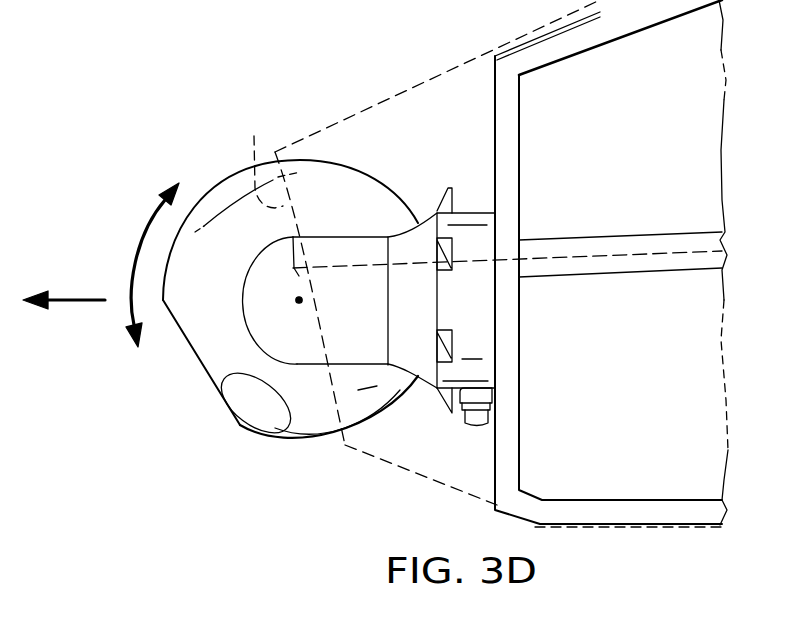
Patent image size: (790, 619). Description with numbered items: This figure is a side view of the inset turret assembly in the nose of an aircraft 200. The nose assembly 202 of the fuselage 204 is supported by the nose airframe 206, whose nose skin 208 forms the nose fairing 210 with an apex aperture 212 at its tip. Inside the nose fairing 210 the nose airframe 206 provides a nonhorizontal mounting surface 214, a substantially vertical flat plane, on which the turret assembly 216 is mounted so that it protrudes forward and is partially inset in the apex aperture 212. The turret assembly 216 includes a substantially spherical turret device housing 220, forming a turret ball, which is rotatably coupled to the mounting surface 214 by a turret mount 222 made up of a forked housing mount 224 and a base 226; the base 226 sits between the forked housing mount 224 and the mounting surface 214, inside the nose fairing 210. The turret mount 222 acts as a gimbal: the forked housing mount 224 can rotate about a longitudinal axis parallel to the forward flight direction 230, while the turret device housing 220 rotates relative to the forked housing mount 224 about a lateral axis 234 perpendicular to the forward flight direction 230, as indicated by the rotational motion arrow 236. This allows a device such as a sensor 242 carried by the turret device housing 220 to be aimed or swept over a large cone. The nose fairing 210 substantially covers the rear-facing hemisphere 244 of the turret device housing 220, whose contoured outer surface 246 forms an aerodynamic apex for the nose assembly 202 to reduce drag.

The aircraft 200 is at (398, 60).
The nose assembly 202 is at (375, 294).
The fuselage 204 is at (593, 528).
The nose airframe 206 is at (632, 33).
The nose skin 208 is at (343, 118).
The nose fairing 210 is at (386, 282).
The apex aperture 212 is at (257, 159).
The nonhorizontal mounting surface 214 is at (494, 126).
The turret assembly 216 is at (357, 165).
The turret device housing 220 is at (212, 350).
The turret mount 222 is at (423, 208).
The forked housing mount 224 is at (332, 236).
The base 226 is at (480, 314).
The forward flight direction 230 is at (78, 300).
The lateral axis 234 is at (299, 300).
The rotational motion arrow 236 is at (138, 242).
The sensor 242 is at (236, 397).
The rear-facing hemisphere 244 is at (393, 404).
The outer surface 246 is at (230, 213).